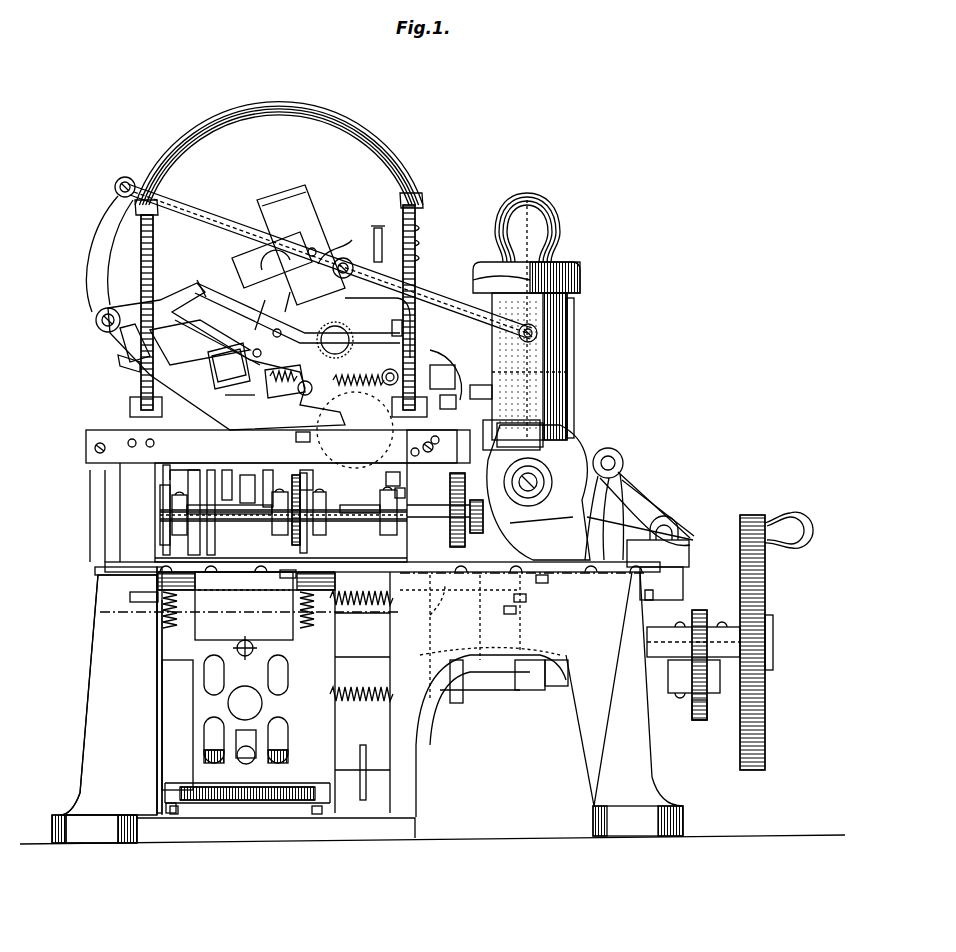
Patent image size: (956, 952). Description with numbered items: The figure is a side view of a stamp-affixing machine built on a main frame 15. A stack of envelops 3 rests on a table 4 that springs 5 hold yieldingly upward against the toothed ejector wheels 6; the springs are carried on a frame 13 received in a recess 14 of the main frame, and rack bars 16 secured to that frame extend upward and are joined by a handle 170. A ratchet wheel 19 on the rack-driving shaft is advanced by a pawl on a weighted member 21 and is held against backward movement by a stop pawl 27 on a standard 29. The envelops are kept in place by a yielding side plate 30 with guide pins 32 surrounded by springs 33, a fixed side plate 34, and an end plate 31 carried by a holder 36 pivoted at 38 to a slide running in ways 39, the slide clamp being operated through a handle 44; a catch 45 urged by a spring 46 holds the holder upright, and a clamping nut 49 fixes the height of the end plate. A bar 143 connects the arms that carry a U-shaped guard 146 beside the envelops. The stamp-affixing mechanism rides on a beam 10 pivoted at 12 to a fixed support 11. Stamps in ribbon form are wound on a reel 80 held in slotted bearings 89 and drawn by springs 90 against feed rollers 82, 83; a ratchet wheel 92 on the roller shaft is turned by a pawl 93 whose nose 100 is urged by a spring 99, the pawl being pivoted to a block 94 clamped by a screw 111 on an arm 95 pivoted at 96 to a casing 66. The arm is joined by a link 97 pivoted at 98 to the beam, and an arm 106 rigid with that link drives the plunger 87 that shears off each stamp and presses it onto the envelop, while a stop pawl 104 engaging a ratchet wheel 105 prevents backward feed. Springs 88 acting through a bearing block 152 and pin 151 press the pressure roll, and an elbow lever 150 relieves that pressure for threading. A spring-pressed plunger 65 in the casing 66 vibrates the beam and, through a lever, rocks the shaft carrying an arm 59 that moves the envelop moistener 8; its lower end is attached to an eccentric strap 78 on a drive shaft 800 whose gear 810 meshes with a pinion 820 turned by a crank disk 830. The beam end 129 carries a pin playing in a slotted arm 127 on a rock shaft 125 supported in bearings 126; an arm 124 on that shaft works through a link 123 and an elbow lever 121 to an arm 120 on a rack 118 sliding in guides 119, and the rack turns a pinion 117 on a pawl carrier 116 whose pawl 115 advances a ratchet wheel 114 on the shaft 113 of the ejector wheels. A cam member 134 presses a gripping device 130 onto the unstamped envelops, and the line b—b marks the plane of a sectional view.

The handle 170 is at (322, 104).
The link or arm 97 is at (96, 257).
The pivot 98 is at (98, 328).
The arm or beam 10 is at (130, 358).
The arm 106 is at (128, 368).
The rack bars 16 is at (156, 262).
The clamping screw 111 is at (420, 200).
The arm 95 is at (428, 300).
The spring-pressed stop pawl 104 is at (430, 308).
The plunger 87 is at (275, 208).
The feed roller 82 is at (302, 256).
The ratchet wheel 92 is at (228, 290).
The nose 100 is at (314, 246).
The spring 99 is at (340, 242).
The block 94 is at (380, 228).
The pawl 93 is at (350, 256).
The pivot 96 is at (578, 322).
The casing 66 is at (574, 348).
The spring-pressed plunger 65 is at (568, 372).
The ratchet wheel 19 is at (560, 395).
The fixed support 11 is at (552, 432).
The pivot 12 is at (600, 450).
The rock shaft 125 is at (623, 460).
The bearings 126 is at (620, 484).
The end of beam 129 is at (650, 478).
The slotted arm 127 is at (654, 496).
The arm 124 is at (658, 512).
The link 123 is at (680, 532).
The standard 29 is at (538, 492).
The stop pawl 27 is at (458, 448).
The ratchet wheel 105 is at (402, 328).
The reel or drum 80 is at (452, 358).
The slotted bearings 89 is at (444, 368).
The weighted member 21 is at (450, 394).
The elbow lever 150 is at (180, 330).
The bearing block 152 is at (228, 366).
The pin 151 is at (248, 392).
The springs 88 is at (278, 392).
The arm 59 is at (206, 484).
The bar 143 is at (226, 478).
The feed roller 83 is at (298, 440).
The envelop moistener 8 is at (218, 526).
The spring 90 is at (355, 430).
The envelop ejectors 6 is at (313, 478).
The pawl 115 is at (410, 478).
The ratchet wheel 114 is at (410, 490).
The shaft 113 is at (370, 510).
The cam member 134 is at (250, 537).
The gripping device 130 is at (296, 575).
The pawl carrier 116 is at (456, 542).
The stack of envelops 3 is at (110, 584).
The section line b— b is at (130, 612).
The table 4 is at (135, 600).
The springs 5 is at (162, 620).
The side plate 30 is at (336, 592).
The end plate 31 is at (244, 606).
The springs 33 is at (360, 606).
The guide pins 32 is at (426, 700).
The main frame 15 is at (90, 774).
The fixed side plate 34 is at (160, 660).
The frame 13 is at (165, 662).
The recess 14 is at (165, 740).
The clamping nut 49 is at (262, 656).
The catch 45 is at (240, 760).
The spring 46 is at (282, 770).
The holder 36 is at (168, 812).
The ways 39 is at (175, 815).
The pivot 38 is at (185, 802).
The handle 44 is at (364, 802).
The U-shaped guard 146 is at (342, 805).
The guides 119 is at (472, 700).
The eccentric strap 78 is at (534, 692).
The drive shaft 800 is at (560, 688).
The arm 120 is at (548, 580).
The pinion 117 is at (526, 598).
The rack 118 is at (516, 610).
The elbow lever 121 is at (648, 602).
The pinion 820 is at (702, 612).
The crank disk 830 is at (768, 604).
The gear 810 is at (699, 722).